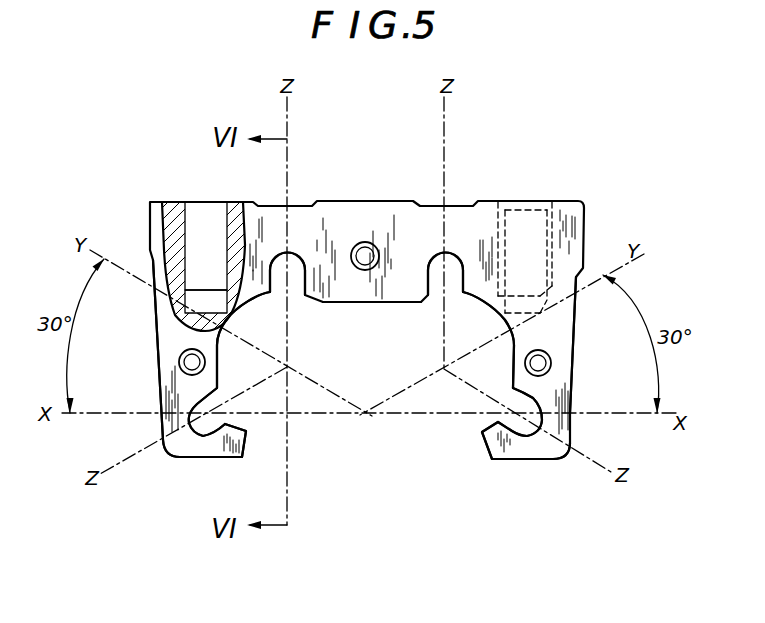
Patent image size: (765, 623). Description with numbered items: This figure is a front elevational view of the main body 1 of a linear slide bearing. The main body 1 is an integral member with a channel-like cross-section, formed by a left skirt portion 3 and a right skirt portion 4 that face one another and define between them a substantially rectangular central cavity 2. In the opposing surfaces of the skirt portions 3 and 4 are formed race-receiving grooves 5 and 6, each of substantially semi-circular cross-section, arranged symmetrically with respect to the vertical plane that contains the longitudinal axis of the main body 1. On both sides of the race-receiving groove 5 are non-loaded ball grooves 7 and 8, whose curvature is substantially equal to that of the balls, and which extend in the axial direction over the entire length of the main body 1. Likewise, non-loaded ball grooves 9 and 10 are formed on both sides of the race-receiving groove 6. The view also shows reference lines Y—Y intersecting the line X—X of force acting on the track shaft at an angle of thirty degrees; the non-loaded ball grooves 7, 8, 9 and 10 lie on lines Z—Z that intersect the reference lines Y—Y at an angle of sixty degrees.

The main body 1 is at (504, 201).
The central cavity 2 is at (347, 341).
The left skirt portion 3 is at (160, 349).
The right skirt portion 4 is at (574, 350).
The race-receiving groove 5 is at (244, 306).
The race-receiving groove 6 is at (486, 315).
The non-loaded ball groove 7 is at (297, 263).
The non-loaded ball groove 8 is at (205, 434).
The non-loaded ball groove 9 is at (430, 266).
The non-loaded ball groove 10 is at (526, 436).